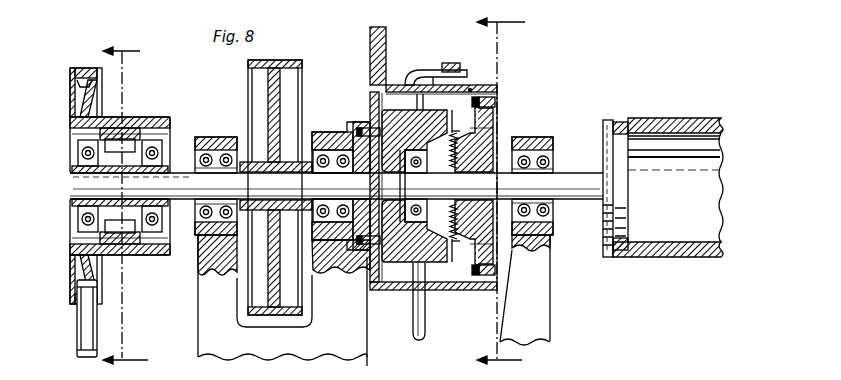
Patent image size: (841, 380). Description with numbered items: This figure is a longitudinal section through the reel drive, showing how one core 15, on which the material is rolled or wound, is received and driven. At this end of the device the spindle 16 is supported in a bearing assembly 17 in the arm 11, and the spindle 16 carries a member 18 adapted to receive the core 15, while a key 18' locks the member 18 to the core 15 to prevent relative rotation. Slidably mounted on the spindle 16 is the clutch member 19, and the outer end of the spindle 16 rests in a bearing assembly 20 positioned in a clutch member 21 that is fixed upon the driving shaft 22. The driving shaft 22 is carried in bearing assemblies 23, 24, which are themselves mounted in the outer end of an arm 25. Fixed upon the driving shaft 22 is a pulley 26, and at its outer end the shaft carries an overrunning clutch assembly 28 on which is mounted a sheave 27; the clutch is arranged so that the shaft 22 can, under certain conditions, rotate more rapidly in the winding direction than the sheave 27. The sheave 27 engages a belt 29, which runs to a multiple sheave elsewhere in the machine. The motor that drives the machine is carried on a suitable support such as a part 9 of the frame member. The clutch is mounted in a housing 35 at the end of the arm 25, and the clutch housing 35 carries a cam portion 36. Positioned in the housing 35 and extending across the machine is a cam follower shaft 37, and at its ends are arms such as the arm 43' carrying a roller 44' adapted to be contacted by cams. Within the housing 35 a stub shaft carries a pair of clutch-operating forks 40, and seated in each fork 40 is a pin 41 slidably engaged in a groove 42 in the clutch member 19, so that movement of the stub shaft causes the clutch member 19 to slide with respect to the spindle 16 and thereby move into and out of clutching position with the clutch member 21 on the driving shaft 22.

The sheave 27 is at (70, 76).
The overrunning clutch assembly 28 is at (72, 150).
The driving shaft 22 is at (88, 185).
The belt 29 is at (80, 328).
The part 9 is at (132, 208).
The bearing assembly 23 is at (200, 159).
The pulley 26 is at (250, 62).
The arm 25 is at (206, 313).
The bearing assembly 24 is at (358, 173).
The cam portion 36 is at (388, 32).
The clutch housing 35 is at (470, 85).
The bearing assembly 20 is at (413, 263).
The arm 43' is at (436, 61).
The roller 44' is at (460, 50).
The clutch member 21 is at (395, 113).
The clutch member 19 is at (495, 138).
The clutch-operating fork 40 is at (498, 96).
The pin 41 is at (497, 103).
The shaft 37 is at (427, 327).
The bearing assembly 17 is at (544, 137).
The groove 42 is at (511, 266).
The spindle 16 is at (571, 173).
The key 18' is at (625, 170).
The member 18 is at (633, 188).
The core 15 is at (698, 258).
The arm 11 is at (576, 296).